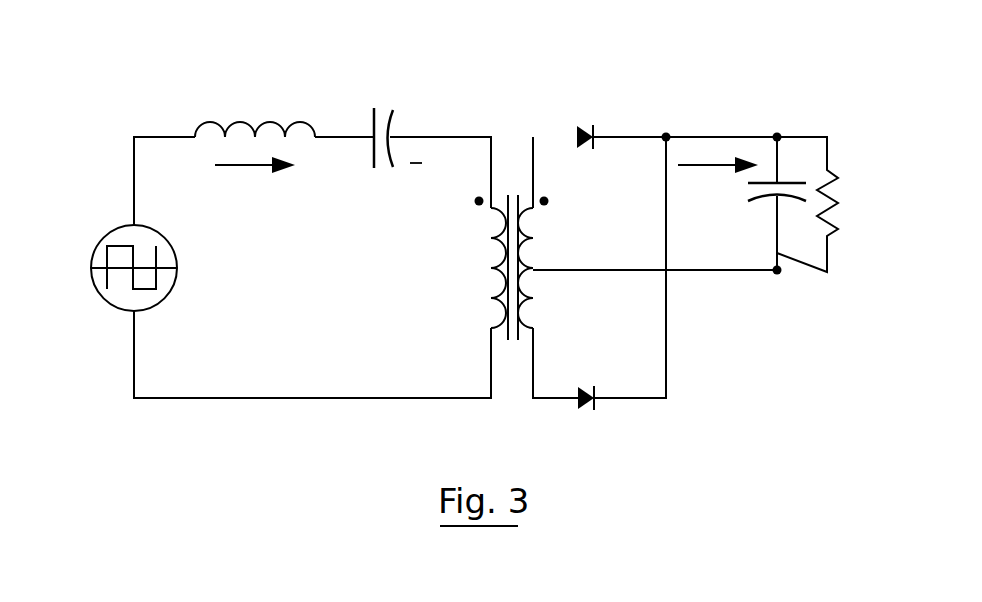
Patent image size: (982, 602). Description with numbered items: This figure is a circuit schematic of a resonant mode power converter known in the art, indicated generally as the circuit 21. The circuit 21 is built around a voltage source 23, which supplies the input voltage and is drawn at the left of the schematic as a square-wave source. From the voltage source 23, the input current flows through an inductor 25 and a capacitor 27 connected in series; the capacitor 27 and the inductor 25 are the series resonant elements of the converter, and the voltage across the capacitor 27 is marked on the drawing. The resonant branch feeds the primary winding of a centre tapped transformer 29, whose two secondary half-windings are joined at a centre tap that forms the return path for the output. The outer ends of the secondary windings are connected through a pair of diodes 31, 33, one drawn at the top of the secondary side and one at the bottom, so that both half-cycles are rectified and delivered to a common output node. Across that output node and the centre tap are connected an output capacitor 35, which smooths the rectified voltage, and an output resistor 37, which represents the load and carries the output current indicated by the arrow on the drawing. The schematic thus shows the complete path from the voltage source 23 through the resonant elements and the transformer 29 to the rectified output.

The circuit 21 is at (122, 113).
The voltage source 23 is at (116, 226).
The inductor 25 is at (205, 122).
The capacitor 27 is at (372, 125).
The centre tapped transformer 29 is at (490, 237).
The diode 31 is at (583, 127).
The diode 33 is at (583, 387).
The output capacitor 35 is at (765, 180).
The output resistor 37 is at (838, 198).